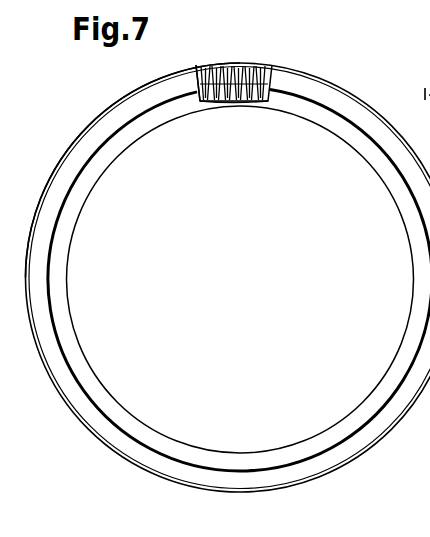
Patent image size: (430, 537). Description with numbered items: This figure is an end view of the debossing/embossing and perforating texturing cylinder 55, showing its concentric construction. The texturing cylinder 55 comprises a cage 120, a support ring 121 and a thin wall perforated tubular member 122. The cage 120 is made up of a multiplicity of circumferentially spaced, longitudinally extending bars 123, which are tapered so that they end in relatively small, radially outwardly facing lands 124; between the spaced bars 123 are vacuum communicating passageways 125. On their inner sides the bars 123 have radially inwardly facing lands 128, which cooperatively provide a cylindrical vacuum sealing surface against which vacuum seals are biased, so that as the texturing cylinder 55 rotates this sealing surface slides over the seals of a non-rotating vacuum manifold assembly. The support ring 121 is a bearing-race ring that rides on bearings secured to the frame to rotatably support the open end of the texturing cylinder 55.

The texturing cylinder 55 is at (108, 94).
The cage 120 is at (90, 174).
The support ring 121 is at (78, 152).
The thin wall perforated tubular member 122 is at (266, 68).
The bars 123 is at (248, 101).
The radially outwardly facing lands 124 is at (222, 88).
The vacuum communicating passageways 125 is at (215, 70).
The radially inwardly facing lands 128 is at (212, 106).